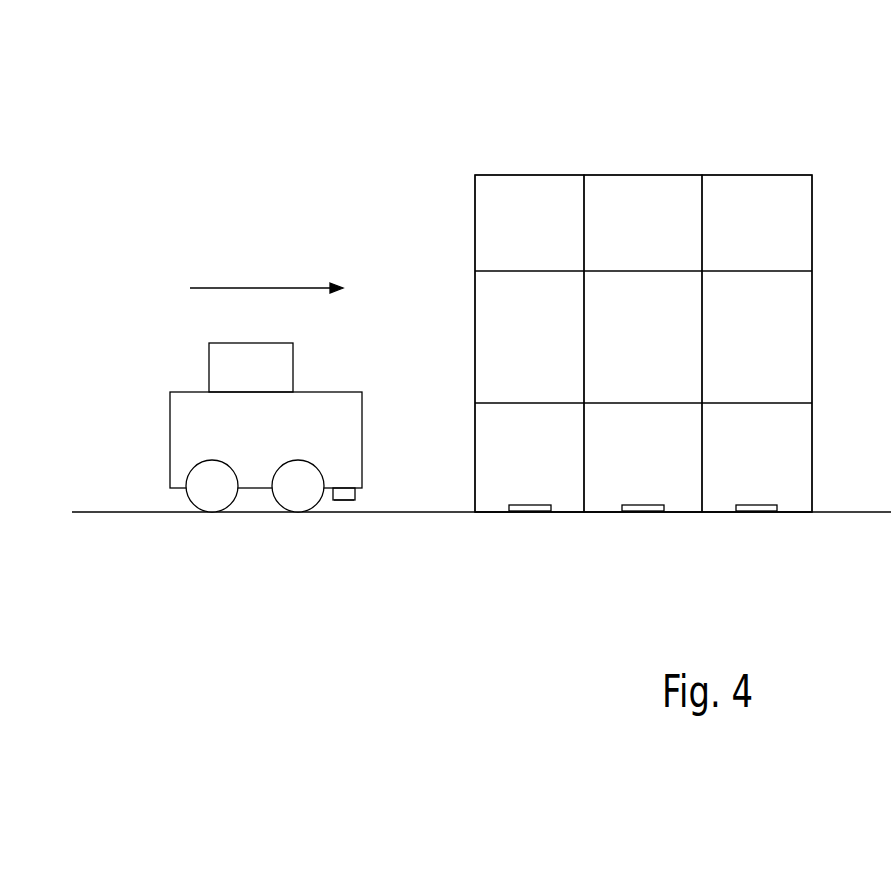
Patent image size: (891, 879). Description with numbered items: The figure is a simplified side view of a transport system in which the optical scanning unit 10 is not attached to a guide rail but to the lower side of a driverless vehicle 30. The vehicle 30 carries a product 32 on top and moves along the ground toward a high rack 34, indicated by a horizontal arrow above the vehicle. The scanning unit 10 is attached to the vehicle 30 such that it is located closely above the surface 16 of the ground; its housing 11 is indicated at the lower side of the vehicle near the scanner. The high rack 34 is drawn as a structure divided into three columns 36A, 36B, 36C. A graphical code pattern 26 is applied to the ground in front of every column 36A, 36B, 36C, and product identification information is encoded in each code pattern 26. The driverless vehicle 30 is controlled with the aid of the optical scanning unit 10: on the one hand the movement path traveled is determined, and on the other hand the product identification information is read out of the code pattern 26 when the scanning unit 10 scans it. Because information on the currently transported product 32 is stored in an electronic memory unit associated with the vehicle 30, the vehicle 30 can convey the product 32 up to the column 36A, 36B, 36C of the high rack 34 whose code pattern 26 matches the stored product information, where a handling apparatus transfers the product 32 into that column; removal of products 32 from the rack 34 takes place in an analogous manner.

The optical scanning unit 10 is at (378, 491).
The housing 11 is at (338, 501).
The surface 16 is at (112, 503).
The graphical code pattern 26 is at (534, 512).
The driverless vehicle 30 is at (272, 442).
The product 32 is at (229, 363).
The high rack 34 is at (750, 175).
The column 36A is at (533, 150).
The column 36B is at (644, 149).
The column 36C is at (762, 80).